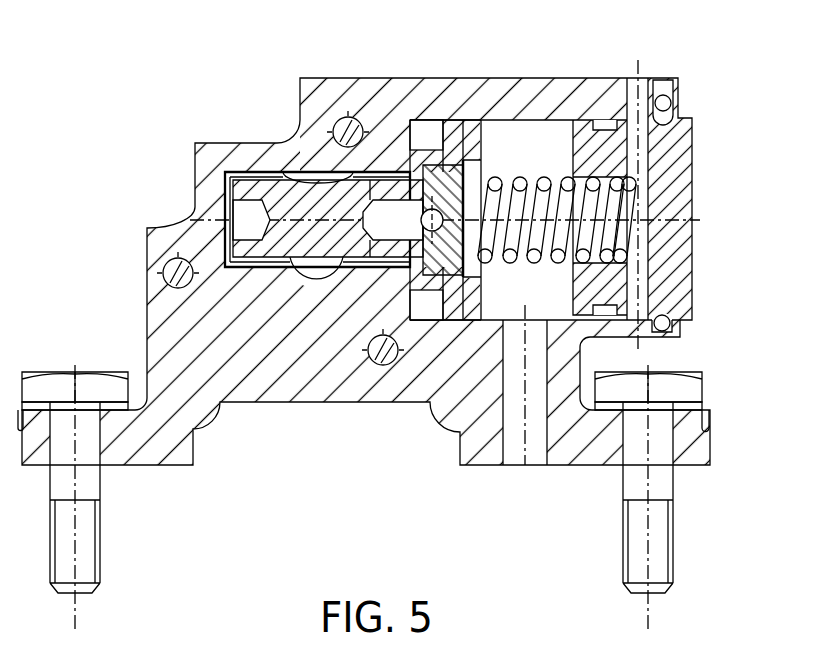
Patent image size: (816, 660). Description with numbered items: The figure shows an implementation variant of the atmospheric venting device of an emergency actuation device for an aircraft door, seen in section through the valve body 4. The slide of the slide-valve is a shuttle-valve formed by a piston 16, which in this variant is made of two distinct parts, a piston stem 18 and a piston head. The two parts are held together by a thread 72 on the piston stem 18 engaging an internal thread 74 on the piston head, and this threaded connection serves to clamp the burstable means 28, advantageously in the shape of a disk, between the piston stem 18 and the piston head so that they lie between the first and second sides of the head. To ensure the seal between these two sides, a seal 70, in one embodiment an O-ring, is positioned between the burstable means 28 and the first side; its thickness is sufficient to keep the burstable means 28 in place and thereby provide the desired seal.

The valve body 4 is at (160, 305).
The piston 16 is at (338, 190).
The piston stem 18 is at (462, 315).
The burstable means 28 is at (462, 214).
The seal 70 is at (480, 160).
The thread 72 is at (313, 212).
The internal thread 74 is at (462, 137).